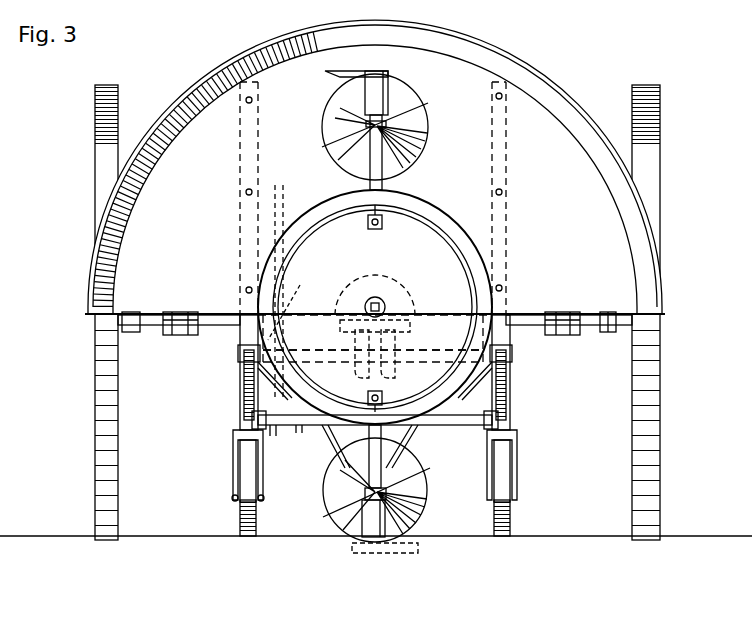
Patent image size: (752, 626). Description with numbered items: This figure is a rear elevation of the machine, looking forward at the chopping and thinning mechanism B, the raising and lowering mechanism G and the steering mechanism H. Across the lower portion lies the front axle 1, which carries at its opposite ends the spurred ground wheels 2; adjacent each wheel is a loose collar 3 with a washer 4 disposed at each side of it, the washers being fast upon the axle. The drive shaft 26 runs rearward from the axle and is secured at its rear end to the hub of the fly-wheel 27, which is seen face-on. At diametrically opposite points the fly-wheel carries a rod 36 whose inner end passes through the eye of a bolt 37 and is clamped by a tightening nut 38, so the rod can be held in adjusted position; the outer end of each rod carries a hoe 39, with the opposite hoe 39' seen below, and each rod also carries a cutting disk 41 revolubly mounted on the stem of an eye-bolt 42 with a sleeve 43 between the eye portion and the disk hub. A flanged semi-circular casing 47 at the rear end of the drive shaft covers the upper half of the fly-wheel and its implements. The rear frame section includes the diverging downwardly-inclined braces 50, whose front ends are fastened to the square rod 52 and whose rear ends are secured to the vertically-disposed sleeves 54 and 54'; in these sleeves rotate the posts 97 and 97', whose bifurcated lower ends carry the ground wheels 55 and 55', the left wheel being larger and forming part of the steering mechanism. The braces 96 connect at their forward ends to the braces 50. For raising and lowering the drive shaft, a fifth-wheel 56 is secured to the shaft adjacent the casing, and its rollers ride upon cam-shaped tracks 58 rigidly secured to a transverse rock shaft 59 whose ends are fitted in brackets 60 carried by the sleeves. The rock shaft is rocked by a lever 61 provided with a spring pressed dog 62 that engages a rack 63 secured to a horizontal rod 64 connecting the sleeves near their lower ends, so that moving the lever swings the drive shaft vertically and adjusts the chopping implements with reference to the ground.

The front axle 1 is at (604, 330).
The spurred ground wheels 2 is at (93, 190).
The loose collar 3 is at (180, 335).
The washers 4 is at (190, 312).
The drive shaft 26 is at (375, 297).
The fly-wheel 27 is at (480, 252).
The rod 36 is at (384, 190).
The bolt 37 is at (378, 230).
The tightening nut 38 is at (366, 225).
The hoe 39 is at (356, 80).
The hoe 39' is at (385, 551).
The cutting disk 41 is at (428, 132).
The eye-bolt 42 is at (386, 122).
The sleeve 43 is at (405, 490).
The flanged semi-circular casing 47 is at (172, 110).
The braces 50 is at (516, 403).
The square rod 52 is at (345, 327).
The sleeve 54 is at (225, 372).
The sleeve 54' is at (522, 380).
The ground wheel 55 is at (223, 518).
The ground wheel 55' is at (528, 512).
The fifth-wheel 56 is at (340, 320).
The cam-shaped tracks 58 is at (375, 361).
The rock shaft 59 is at (482, 365).
The brackets 60 is at (240, 362).
The lever 61 is at (282, 287).
The spring pressed dog 62 is at (292, 301).
The rack 63 is at (273, 436).
The horizontal rod 64 is at (299, 433).
The brace 96 is at (345, 450).
The post 97 is at (225, 466).
The post 97' is at (522, 466).
The chopping and thinning mechanism B is at (375, 307).
The mechanism for raising and lowering the drive shaft G is at (408, 314).
The steering mechanism H is at (233, 465).